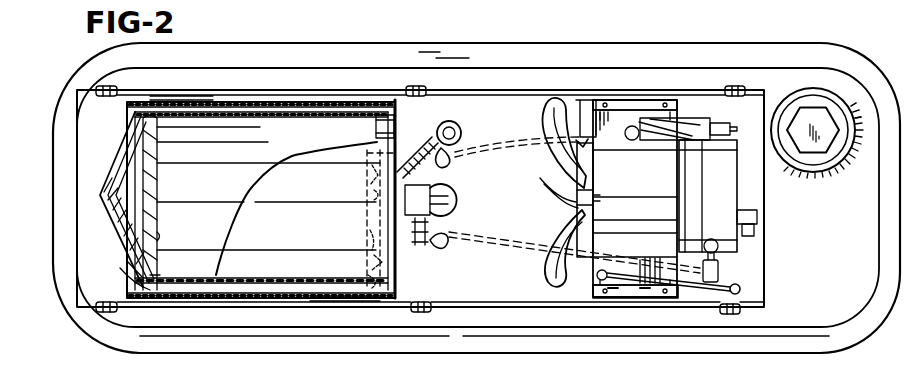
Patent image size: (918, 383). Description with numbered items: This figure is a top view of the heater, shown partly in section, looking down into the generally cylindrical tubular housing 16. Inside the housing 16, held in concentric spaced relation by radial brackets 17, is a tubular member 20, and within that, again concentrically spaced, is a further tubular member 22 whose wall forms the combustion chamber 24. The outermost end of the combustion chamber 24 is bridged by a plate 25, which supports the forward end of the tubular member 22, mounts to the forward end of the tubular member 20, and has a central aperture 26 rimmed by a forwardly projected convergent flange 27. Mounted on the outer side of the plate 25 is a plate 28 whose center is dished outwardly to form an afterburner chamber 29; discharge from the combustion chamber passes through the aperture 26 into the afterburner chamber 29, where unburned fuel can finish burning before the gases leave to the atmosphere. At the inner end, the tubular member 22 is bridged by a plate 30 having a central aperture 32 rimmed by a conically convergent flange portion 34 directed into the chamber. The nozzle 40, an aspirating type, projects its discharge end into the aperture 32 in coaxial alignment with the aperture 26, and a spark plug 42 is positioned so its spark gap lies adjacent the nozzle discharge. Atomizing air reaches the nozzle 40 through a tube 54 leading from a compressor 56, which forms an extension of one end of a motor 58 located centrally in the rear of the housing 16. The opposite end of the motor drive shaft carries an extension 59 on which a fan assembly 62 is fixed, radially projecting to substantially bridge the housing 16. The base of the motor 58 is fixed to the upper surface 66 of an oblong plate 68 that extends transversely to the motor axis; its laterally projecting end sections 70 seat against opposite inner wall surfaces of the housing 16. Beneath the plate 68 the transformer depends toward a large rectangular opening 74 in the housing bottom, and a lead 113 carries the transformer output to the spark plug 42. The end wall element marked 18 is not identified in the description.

The tubular housing 16 is at (80, 260).
The radial brackets 17 is at (183, 97).
The end wall 18 is at (368, 127).
The tubular member 20 is at (258, 100).
The tubular member 22 is at (197, 117).
The combustion chamber 24 is at (314, 123).
The plate 25 is at (185, 268).
The central aperture 26 is at (157, 225).
The convergent flange 27 is at (135, 258).
The plate 28 is at (118, 147).
The afterburner chamber 29 is at (118, 170).
The plate 30 is at (356, 113).
The central aperture 32 is at (366, 215).
The conically convergent flange portion 34 is at (368, 172).
The nozzle 40 is at (446, 197).
The spark plug 42 is at (398, 147).
The tube 54 is at (501, 240).
The compressor 56 is at (716, 180).
The motor 58 is at (640, 175).
The extension 59 is at (541, 180).
The fan assembly 62 is at (535, 262).
The upper surface 66 is at (600, 264).
The oblong plate 68 is at (583, 104).
The end sections 70 is at (637, 100).
The rectangular opening 74 is at (588, 216).
The lead 113 is at (496, 140).